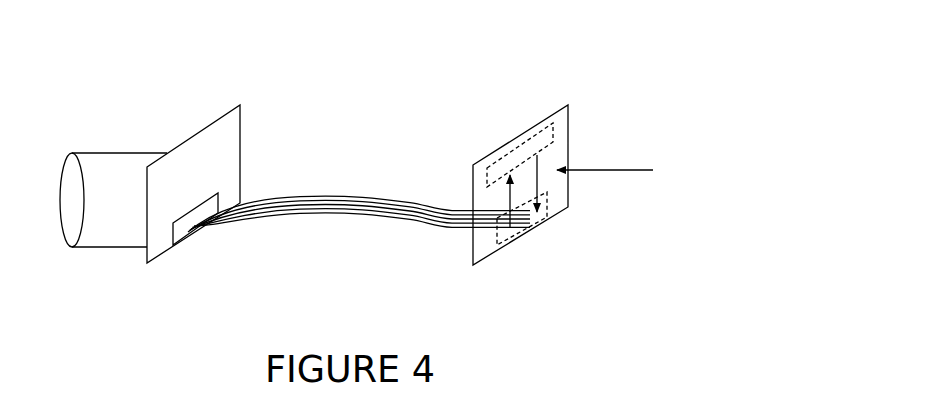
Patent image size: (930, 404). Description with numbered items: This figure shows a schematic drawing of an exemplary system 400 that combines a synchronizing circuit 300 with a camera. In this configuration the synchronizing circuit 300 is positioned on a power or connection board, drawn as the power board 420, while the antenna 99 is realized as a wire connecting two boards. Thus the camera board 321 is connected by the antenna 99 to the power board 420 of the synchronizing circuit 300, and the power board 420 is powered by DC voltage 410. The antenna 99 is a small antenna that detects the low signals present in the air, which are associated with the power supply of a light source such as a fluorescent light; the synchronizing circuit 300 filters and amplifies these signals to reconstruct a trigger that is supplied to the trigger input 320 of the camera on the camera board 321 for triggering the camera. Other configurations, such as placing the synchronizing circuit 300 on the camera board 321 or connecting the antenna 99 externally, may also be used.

The system 400 is at (295, 72).
The camera board 321 is at (157, 263).
The trigger input 320 is at (403, 205).
The antenna 99 is at (308, 215).
The synchronizing circuit 300 is at (503, 152).
The power board 420 is at (545, 223).
The DC voltage 410 is at (625, 168).